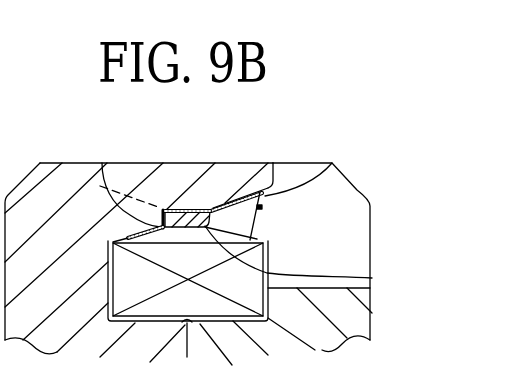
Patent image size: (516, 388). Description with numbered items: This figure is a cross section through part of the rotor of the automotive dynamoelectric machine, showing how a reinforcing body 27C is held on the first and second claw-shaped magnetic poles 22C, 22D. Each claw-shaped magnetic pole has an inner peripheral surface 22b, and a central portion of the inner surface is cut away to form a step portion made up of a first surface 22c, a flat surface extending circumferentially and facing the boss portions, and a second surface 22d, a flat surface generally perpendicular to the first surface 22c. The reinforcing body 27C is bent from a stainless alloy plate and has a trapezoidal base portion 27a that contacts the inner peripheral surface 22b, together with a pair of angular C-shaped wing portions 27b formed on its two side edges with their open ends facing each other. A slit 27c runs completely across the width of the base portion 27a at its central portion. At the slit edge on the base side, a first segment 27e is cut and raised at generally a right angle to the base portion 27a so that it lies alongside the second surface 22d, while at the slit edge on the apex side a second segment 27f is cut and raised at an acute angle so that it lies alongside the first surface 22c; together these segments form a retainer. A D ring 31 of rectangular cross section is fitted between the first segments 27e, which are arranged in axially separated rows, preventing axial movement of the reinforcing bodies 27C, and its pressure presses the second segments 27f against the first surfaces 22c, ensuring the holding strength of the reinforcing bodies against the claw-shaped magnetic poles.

The second claw-shaped magnetic pole 22D is at (60, 187).
The first claw-shaped magnetic pole 22C is at (296, 173).
The inner peripheral surface 22b is at (236, 191).
The first surface 22c is at (178, 207).
The second surface 22d is at (163, 211).
The first segment 27e is at (102, 163).
The slit 27c is at (163, 210).
The second segment 27f is at (207, 194).
The base portion 27a is at (332, 163).
The reinforcing body 27C is at (263, 207).
The wing portion 27b is at (243, 219).
The D ring 31 is at (373, 279).